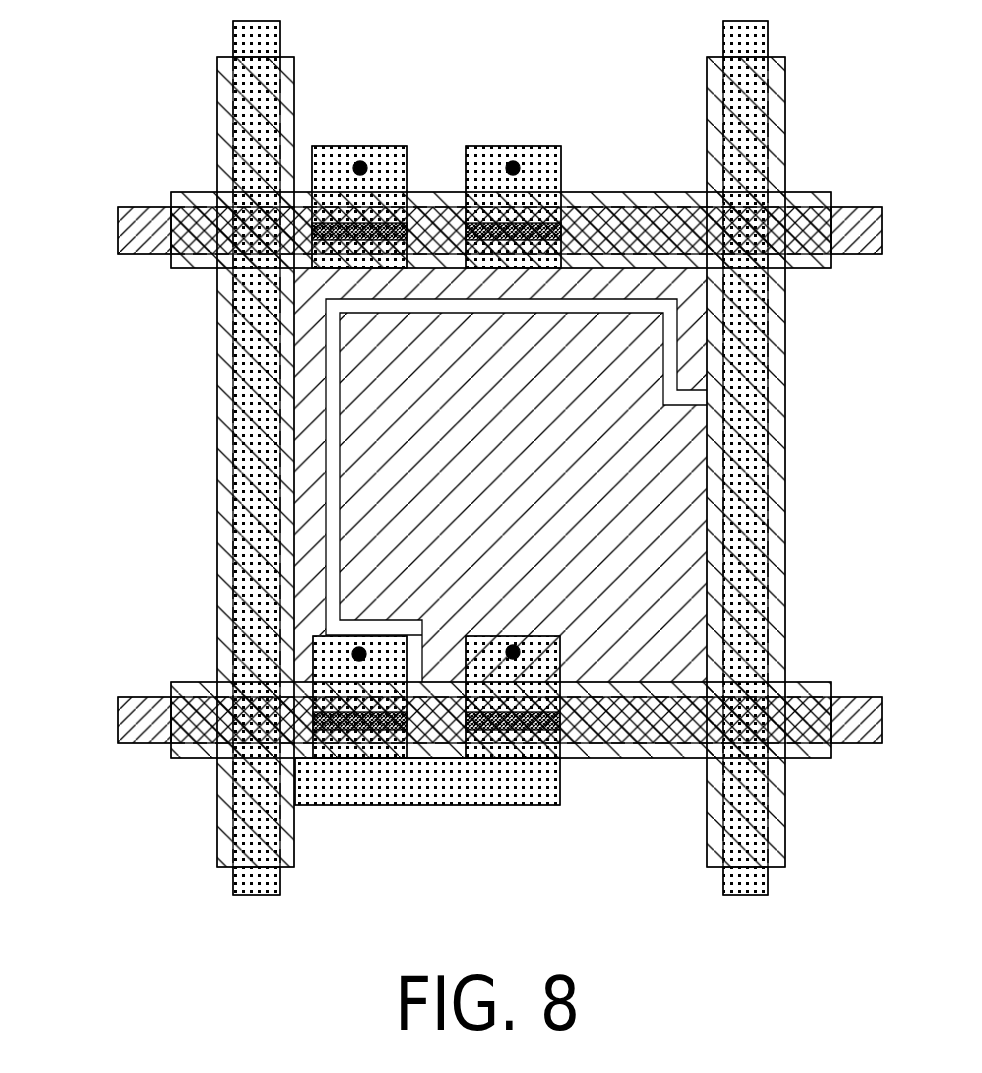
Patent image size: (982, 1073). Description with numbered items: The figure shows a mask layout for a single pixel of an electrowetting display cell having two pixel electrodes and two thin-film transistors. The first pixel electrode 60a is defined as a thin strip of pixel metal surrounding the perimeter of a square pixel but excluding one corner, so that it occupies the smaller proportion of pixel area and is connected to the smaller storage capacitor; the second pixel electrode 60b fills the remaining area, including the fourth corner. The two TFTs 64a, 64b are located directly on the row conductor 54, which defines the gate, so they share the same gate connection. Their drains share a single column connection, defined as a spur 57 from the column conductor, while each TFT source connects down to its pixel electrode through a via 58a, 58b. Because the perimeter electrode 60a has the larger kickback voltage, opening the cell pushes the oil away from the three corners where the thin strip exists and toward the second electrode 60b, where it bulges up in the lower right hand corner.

The row conductor 54 is at (118, 232).
The spur 57 is at (560, 780).
The via 58a is at (362, 648).
The via 58b is at (516, 648).
The first pixel electrode 60a is at (303, 432).
The second pixel electrode 60b is at (653, 513).
The first TFT 64a is at (363, 743).
The second TFT 64b is at (515, 742).